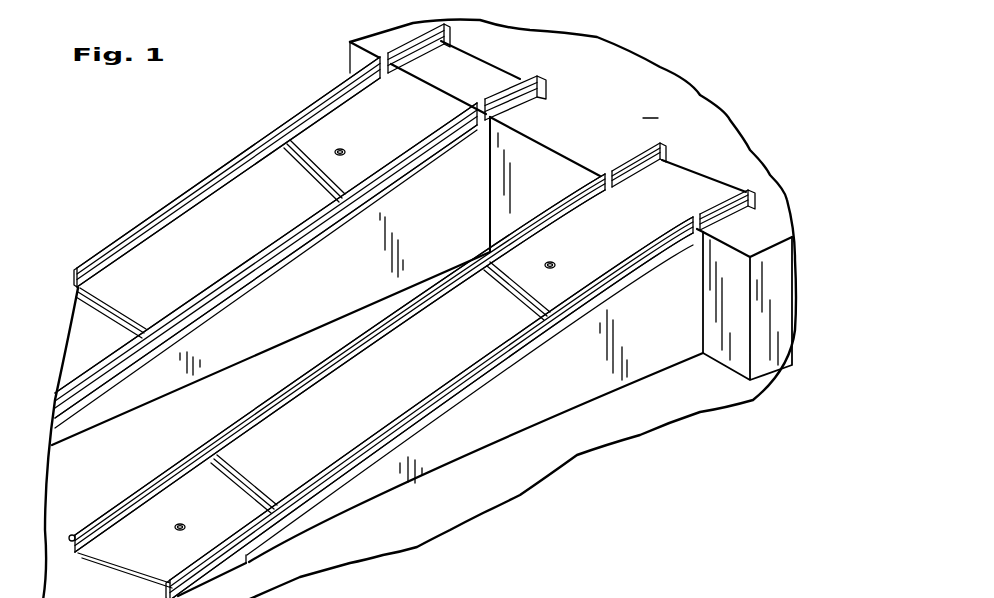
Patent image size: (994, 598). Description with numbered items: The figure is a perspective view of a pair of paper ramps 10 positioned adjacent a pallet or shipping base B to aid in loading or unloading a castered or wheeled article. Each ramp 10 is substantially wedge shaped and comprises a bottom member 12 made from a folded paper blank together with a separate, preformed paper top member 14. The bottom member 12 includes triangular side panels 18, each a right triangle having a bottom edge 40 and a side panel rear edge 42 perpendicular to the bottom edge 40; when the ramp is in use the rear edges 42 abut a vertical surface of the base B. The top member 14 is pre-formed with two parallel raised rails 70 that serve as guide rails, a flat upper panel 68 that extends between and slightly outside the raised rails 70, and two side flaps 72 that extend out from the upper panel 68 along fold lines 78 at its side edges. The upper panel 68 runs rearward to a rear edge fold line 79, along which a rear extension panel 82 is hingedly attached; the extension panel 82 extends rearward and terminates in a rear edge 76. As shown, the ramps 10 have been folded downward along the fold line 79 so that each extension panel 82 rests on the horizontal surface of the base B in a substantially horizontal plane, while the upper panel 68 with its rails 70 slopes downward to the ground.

The paper ramp 10 is at (100, 216).
The bottom member 12 is at (272, 328).
The top member 14 is at (195, 232).
The side panel 18 is at (379, 274).
The side panel bottom edge 40 is at (93, 428).
The side panel rear edge 42 is at (487, 180).
The upper panel 68 is at (280, 210).
The raised rail 70 is at (417, 143).
The side flap 72 is at (396, 197).
The rear edge 76 is at (508, 72).
The fold line (side edge) 78 is at (508, 82).
The rear edge fold line 79 is at (418, 75).
The rear extension panel 82 is at (480, 67).
The base B is at (526, 137).